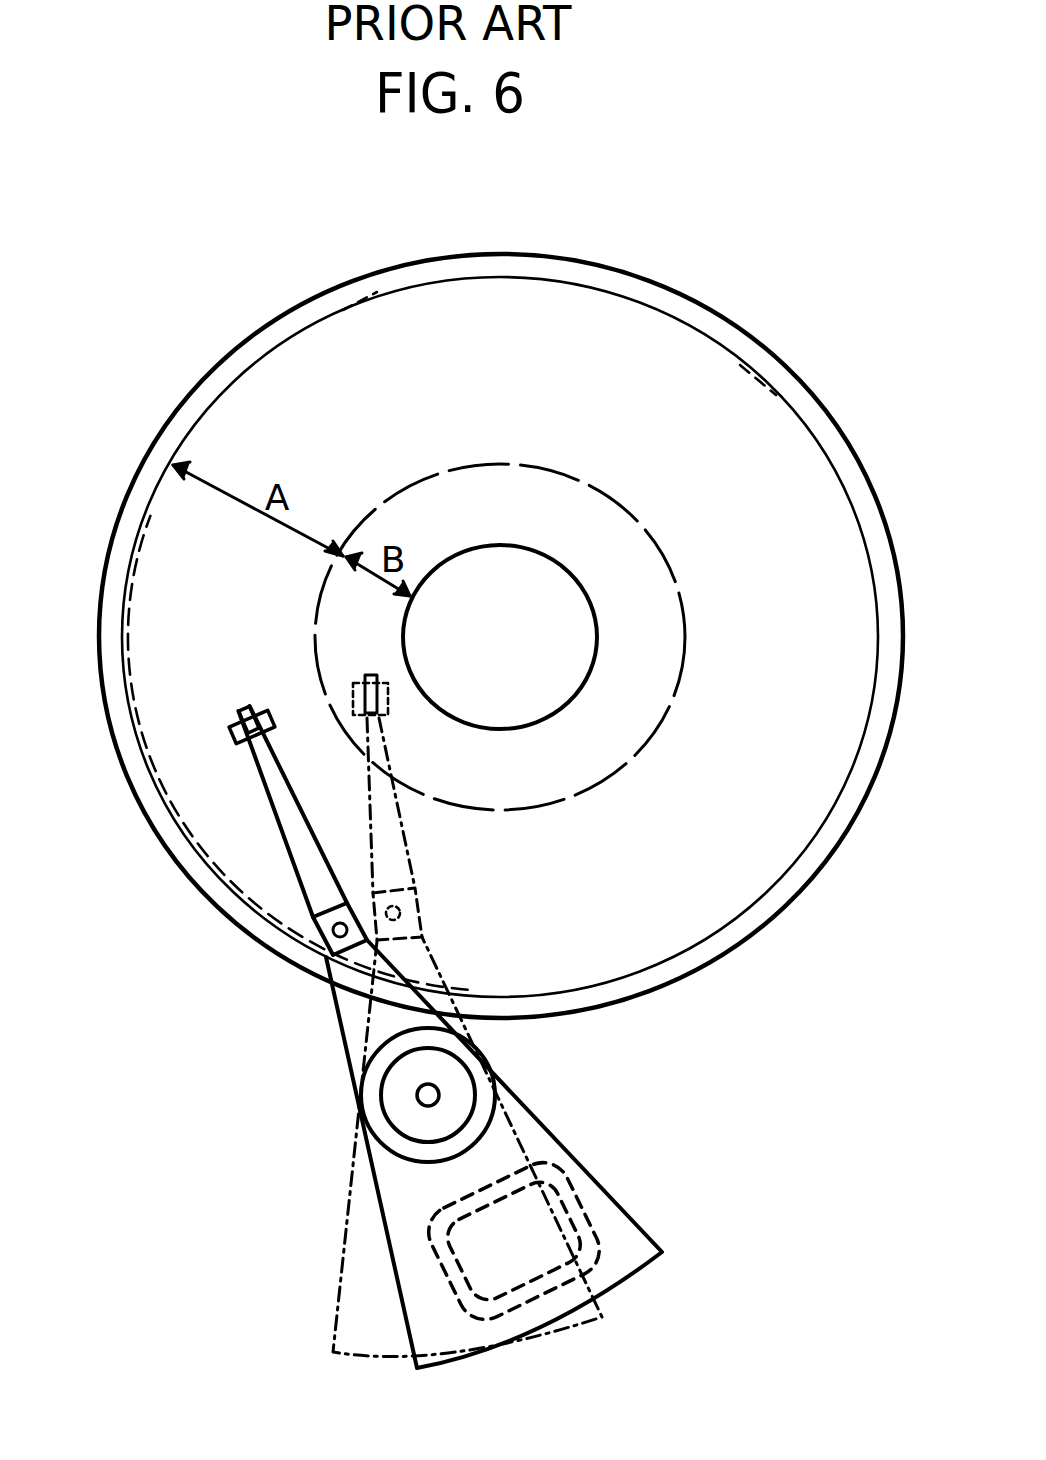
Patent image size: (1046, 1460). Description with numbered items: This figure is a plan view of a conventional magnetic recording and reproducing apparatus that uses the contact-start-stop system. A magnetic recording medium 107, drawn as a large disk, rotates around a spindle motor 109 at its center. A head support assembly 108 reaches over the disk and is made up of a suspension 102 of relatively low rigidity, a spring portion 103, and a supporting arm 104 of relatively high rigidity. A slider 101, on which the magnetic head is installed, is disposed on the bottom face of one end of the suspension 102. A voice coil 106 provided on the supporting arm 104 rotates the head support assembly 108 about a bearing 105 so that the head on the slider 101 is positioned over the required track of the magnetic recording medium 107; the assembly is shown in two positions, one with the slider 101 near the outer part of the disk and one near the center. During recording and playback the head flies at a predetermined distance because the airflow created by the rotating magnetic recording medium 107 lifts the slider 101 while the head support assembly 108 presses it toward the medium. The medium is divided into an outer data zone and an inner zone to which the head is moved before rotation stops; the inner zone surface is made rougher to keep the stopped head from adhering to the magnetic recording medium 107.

The slider 101 is at (232, 742).
The suspension 102 is at (268, 807).
The spring portion 103 is at (320, 943).
The supporting arm 104 is at (343, 1040).
The bearing 105 is at (357, 1112).
The voice coil 106 is at (433, 1267).
The magnetic recording medium 107 is at (280, 395).
The head support assembly 108 is at (625, 1090).
The spindle motor 109 is at (565, 565).